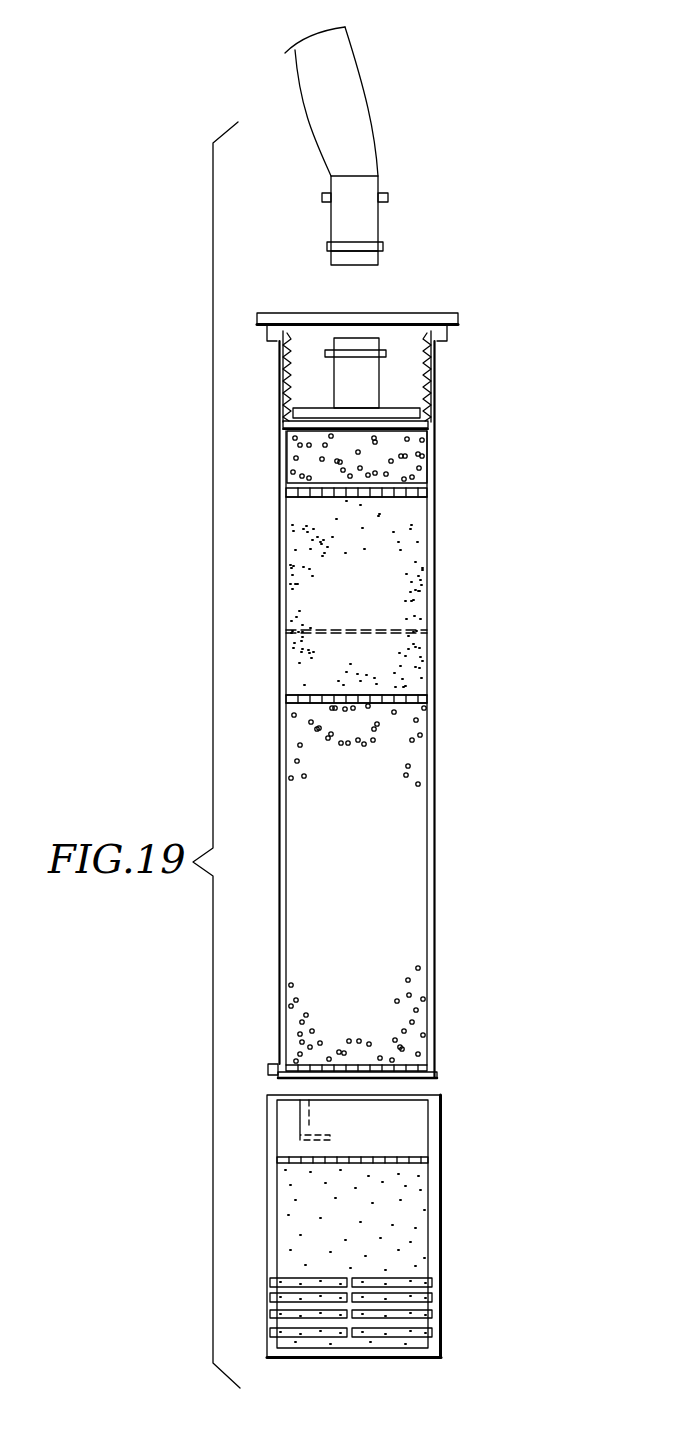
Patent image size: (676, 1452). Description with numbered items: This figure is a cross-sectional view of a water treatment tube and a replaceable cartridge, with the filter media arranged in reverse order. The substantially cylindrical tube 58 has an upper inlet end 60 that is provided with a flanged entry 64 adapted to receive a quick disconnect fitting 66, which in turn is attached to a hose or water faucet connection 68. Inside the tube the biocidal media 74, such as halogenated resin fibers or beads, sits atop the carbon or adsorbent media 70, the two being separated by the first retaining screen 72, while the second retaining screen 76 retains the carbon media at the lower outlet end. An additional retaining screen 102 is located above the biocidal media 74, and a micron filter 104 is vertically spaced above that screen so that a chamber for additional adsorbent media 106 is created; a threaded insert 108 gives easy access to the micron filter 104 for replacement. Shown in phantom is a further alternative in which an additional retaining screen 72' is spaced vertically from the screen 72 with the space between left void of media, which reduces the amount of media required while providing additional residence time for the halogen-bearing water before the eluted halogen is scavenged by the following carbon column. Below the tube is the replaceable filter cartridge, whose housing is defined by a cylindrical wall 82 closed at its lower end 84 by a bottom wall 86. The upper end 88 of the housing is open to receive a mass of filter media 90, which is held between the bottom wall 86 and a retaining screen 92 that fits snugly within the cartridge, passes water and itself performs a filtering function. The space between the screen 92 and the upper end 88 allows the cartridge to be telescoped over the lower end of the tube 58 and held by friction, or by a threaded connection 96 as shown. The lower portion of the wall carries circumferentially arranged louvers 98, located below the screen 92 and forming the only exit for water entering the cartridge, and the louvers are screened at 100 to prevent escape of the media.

The cylindrical tube 58 is at (518, 745).
The upper inlet end 60 is at (478, 320).
The flanged entry 64 is at (302, 320).
The quick disconnect fitting 66 is at (367, 231).
The hose or water faucet connection 68 is at (367, 168).
The carbon or adsorbent media 70 is at (412, 888).
The first retaining screen 72 is at (391, 690).
The additional retaining screen 72' is at (356, 607).
The biocidal media 74 is at (417, 603).
The second retaining screen 76 is at (432, 1079).
The cylindrical wall 82 is at (430, 1162).
The lower end 84 is at (441, 1340).
The bottom wall 86 is at (428, 1358).
The upper end 88 is at (267, 1123).
The filter media 90 is at (286, 1221).
The retaining screen 92 is at (277, 1163).
The threaded connection 96 is at (312, 1127).
The louvers 98 is at (270, 1291).
The louver screen 100 is at (278, 1318).
The additional retaining screen 102 is at (410, 495).
The micron filter 104 is at (413, 425).
The additional adsorbent media 106 is at (415, 461).
The threaded insert 108 is at (415, 378).